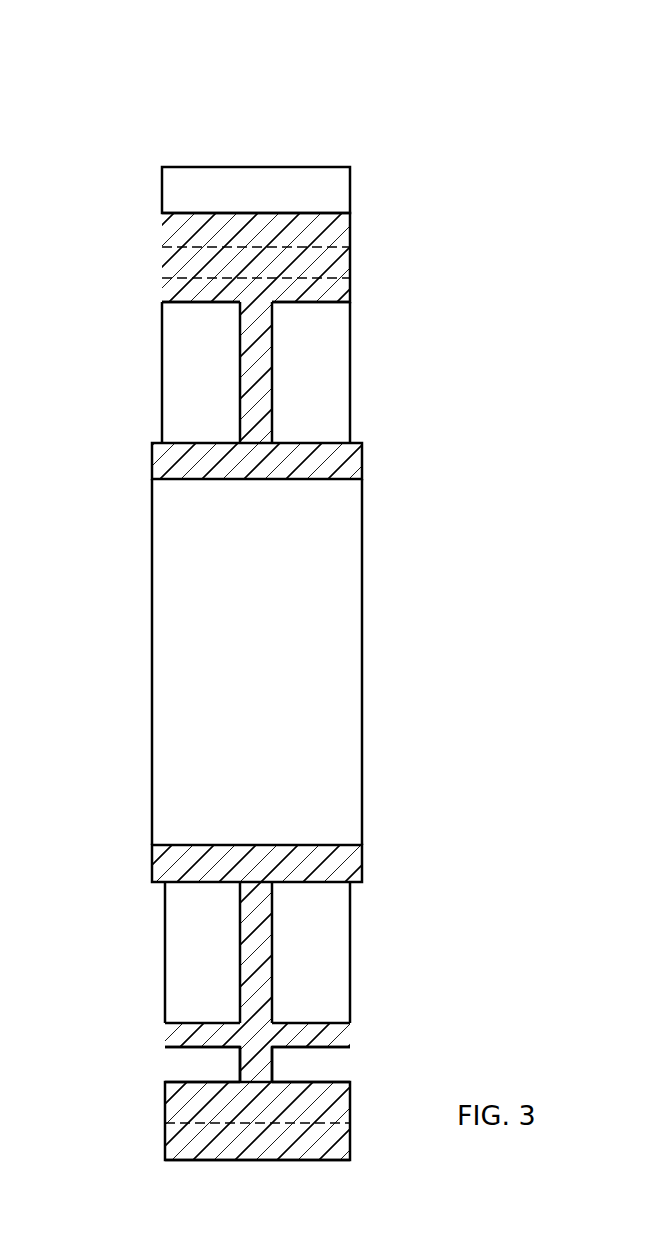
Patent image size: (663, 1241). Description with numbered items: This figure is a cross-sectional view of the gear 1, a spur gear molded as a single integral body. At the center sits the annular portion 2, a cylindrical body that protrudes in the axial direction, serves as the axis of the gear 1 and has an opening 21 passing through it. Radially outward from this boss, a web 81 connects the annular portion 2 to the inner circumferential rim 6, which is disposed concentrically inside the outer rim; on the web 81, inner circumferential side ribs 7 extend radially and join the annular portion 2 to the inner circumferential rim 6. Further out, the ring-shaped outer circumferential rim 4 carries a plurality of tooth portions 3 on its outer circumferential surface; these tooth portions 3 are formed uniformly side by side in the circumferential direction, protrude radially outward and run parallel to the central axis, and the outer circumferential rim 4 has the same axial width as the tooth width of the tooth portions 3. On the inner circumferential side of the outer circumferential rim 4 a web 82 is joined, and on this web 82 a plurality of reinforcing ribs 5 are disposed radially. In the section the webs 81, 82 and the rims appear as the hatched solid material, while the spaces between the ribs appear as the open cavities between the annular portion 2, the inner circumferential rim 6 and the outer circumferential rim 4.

The gear 1 is at (225, 40).
The annular portion 2 is at (152, 870).
The opening 21 is at (232, 480).
The tooth portions 3 is at (162, 187).
The outer circumferential rim 4 is at (162, 231).
The reinforcing ribs 5 is at (190, 264).
The inner circumferential rim 6 is at (190, 296).
The inner circumferential side ribs 7 is at (175, 385).
The web 81 is at (240, 352).
The web 82 is at (240, 1063).